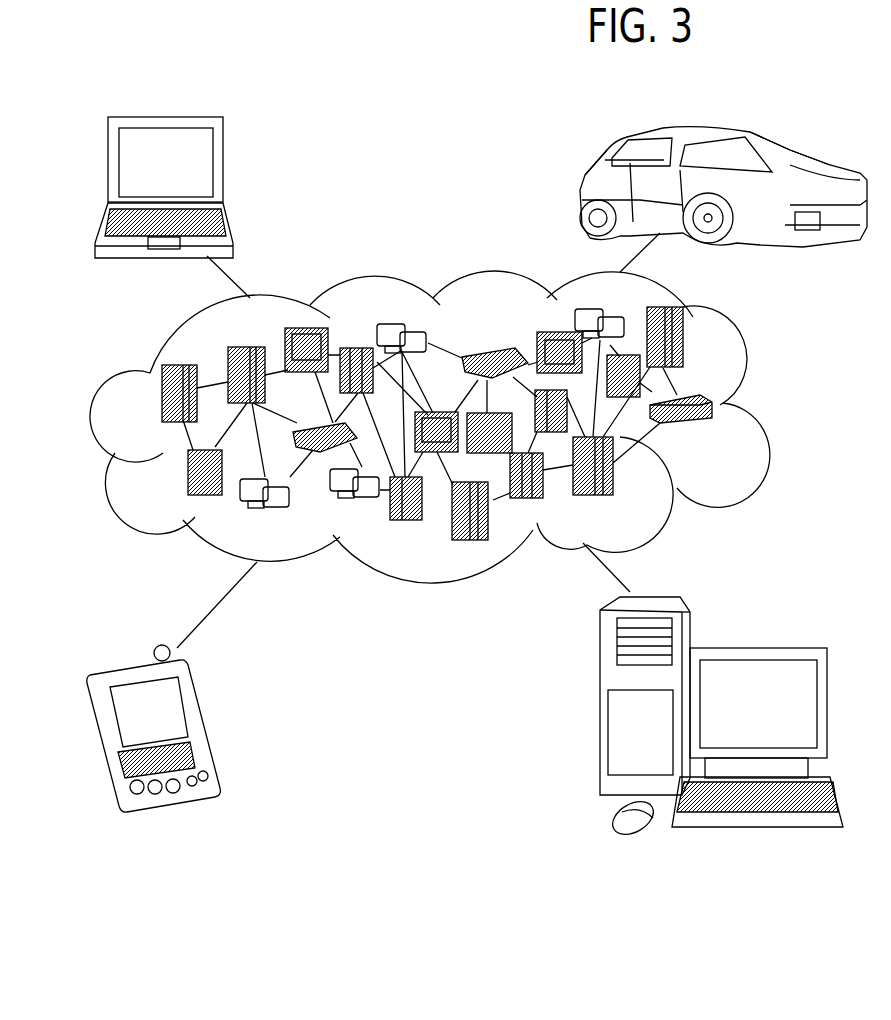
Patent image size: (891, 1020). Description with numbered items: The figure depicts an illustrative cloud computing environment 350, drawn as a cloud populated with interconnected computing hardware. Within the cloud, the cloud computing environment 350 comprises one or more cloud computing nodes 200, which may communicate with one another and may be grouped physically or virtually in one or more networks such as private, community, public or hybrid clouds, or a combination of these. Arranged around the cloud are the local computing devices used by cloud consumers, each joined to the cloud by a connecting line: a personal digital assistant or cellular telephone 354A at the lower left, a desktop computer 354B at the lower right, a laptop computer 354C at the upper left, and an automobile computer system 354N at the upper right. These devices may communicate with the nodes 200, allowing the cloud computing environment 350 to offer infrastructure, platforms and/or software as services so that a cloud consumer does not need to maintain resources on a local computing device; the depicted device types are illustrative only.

The cloud computing nodes 200 is at (466, 459).
The cloud computing environment 350 is at (760, 410).
The personal digital assistant (PDA) or cellular telephone 354A is at (207, 725).
The desktop computer 354B is at (757, 647).
The laptop computer 354C is at (226, 170).
The automobile computer system 354N is at (580, 187).